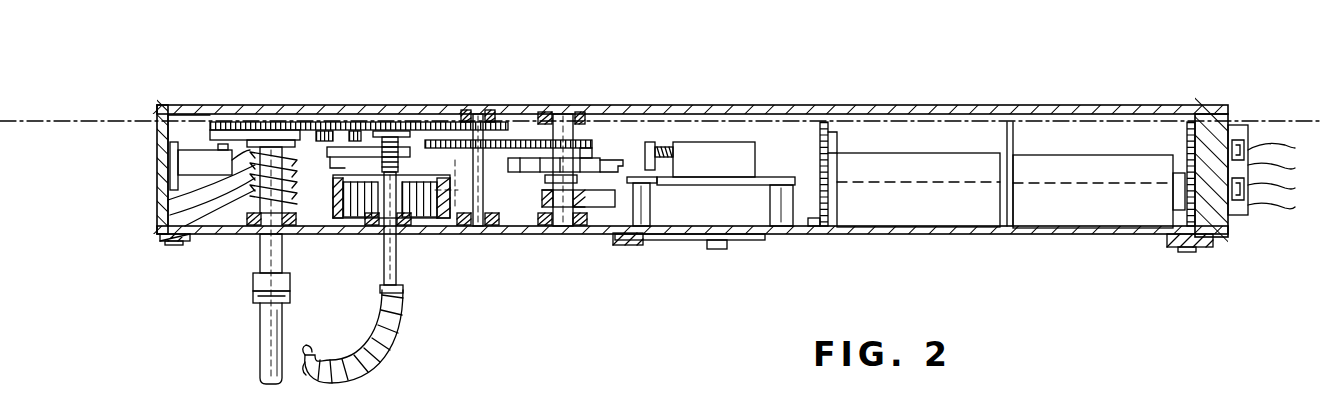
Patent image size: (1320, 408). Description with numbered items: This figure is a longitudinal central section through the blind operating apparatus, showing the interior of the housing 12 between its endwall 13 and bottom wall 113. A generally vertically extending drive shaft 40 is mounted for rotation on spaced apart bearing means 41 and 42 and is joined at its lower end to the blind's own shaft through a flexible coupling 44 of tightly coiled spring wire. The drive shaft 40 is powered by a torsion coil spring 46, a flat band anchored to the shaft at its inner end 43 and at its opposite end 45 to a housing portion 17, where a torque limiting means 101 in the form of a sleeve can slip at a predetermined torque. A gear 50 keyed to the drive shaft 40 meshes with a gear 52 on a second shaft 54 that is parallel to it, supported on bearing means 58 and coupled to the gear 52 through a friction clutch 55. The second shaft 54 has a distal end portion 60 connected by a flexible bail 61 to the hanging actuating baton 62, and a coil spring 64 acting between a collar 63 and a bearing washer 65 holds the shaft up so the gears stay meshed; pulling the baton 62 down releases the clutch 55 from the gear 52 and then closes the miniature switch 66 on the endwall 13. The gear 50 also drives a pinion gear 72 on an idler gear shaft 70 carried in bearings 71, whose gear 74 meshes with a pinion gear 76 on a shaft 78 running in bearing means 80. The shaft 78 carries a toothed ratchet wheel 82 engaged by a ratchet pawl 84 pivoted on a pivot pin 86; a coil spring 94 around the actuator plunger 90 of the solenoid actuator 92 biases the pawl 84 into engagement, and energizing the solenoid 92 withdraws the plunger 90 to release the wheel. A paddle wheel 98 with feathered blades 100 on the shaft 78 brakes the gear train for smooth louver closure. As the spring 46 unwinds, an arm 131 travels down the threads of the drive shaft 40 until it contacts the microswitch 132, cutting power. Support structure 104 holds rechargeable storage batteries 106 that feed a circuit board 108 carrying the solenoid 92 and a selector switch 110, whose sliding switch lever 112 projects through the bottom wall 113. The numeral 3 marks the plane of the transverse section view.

The section line 3- 3 is at (121, 162).
The housing 12 is at (857, 104).
The endwall 13 is at (167, 190).
The housing portion 17 is at (325, 152).
The drive shaft 40 is at (398, 268).
The bearing means 41 is at (400, 131).
The bearing means 42 is at (408, 238).
The inner end anchor 43 is at (367, 243).
The flexible coupling 44 is at (353, 343).
The opposite end 45 is at (345, 220).
The torsion coil spring 46 is at (418, 188).
The gear 50 is at (430, 140).
The gear 52 is at (232, 122).
The second shaft 54 is at (172, 244).
The friction clutch 55 is at (218, 127).
The bearing means 58 is at (286, 110).
The distal end portion 60 is at (255, 282).
The flexible coupling or bail 61 is at (254, 303).
The actuating baton 62 is at (268, 366).
The collar 63 is at (180, 168).
The coil spring 64 is at (168, 200).
The bearing washer 65 is at (218, 226).
The miniature switch 66 is at (186, 140).
The idler gear shaft 70 is at (480, 230).
The bearings 71 is at (480, 112).
The pinion gear 72 is at (503, 123).
The gear 74 is at (520, 142).
The pinion gear 76 is at (597, 140).
The shaft 78 is at (560, 235).
The bearing means 80 is at (573, 104).
The toothed ratchet wheel 82 is at (598, 160).
The ratchet pawl 84 is at (665, 150).
The pivot pin 86 is at (650, 176).
The actuator plunger 90 is at (652, 145).
The solenoid actuator 92 is at (778, 176).
The coil spring 94 is at (672, 150).
The paddle wheel 98 is at (532, 228).
The blades 100 is at (638, 247).
The torque limiting means 101 is at (350, 236).
The support structure 104 is at (830, 205).
The rechargeable storage batteries 106 is at (1033, 170).
The circuit board 108 is at (790, 184).
The selector switch 110 is at (757, 240).
The sliding switch lever 112 is at (722, 252).
The bottom wall 113 is at (1033, 237).
The arm 131 is at (332, 142).
The microswitch 132 is at (356, 148).